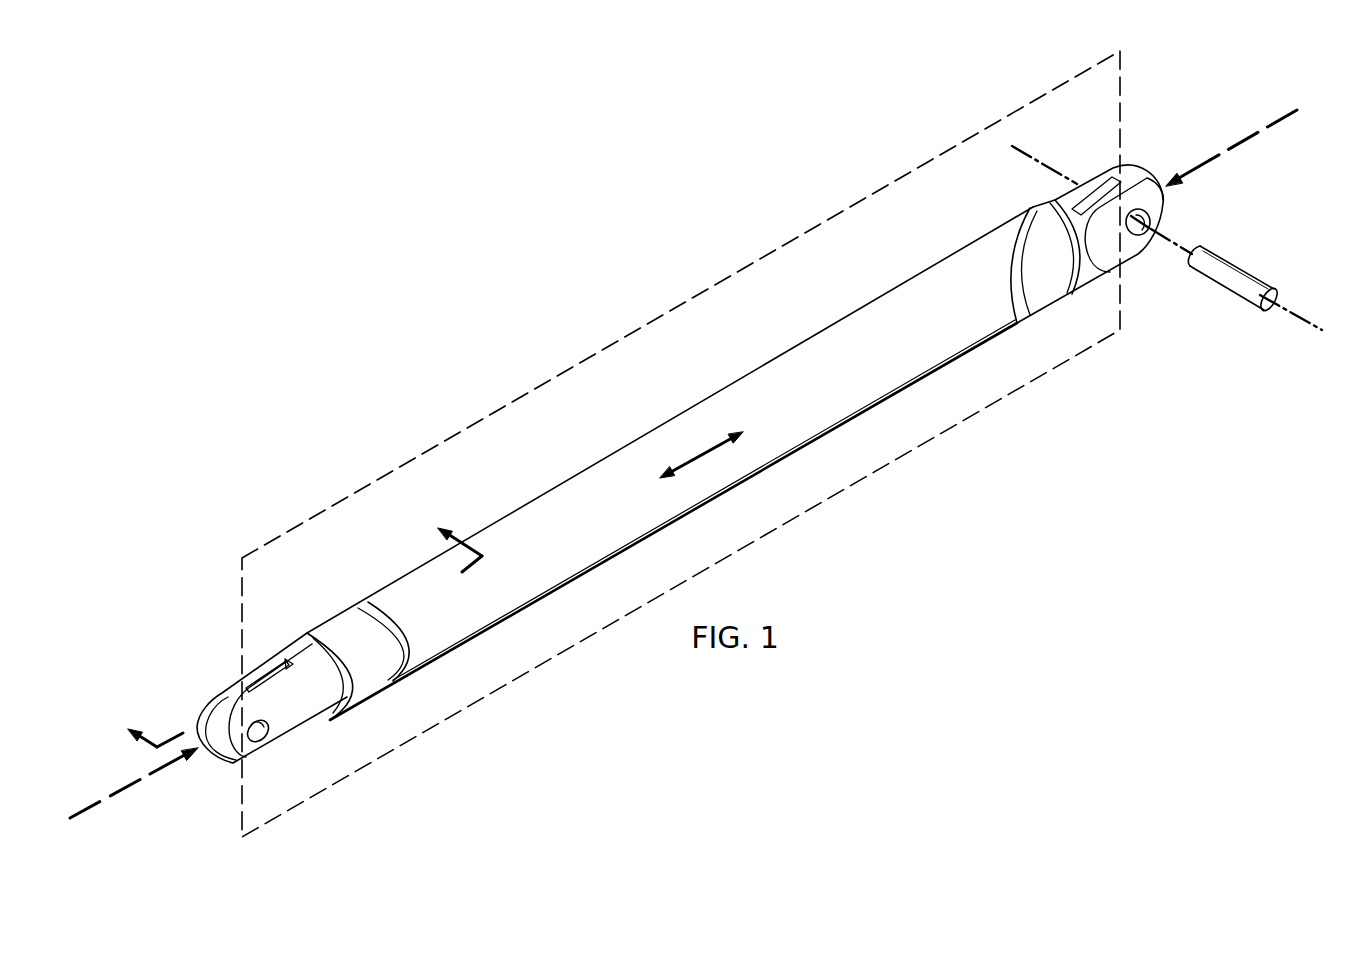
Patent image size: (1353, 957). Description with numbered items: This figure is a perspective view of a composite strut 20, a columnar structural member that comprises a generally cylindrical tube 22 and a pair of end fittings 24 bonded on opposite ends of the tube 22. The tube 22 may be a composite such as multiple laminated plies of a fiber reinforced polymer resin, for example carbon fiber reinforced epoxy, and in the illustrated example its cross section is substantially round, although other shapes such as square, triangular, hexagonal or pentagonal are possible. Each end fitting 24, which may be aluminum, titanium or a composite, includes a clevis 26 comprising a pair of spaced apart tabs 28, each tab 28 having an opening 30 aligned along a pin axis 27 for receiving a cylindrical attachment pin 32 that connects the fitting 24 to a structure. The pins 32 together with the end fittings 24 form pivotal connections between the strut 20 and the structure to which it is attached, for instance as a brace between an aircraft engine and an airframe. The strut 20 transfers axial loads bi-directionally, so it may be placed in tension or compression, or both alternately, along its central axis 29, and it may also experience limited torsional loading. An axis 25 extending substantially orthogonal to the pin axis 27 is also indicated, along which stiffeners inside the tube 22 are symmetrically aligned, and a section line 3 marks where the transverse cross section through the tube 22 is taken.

The section line 3- 3 is at (295, 630).
The strut 20 is at (640, 265).
The tube 22 is at (556, 478).
The end fitting 24 is at (330, 625).
The axis 25 is at (870, 474).
The clevis 26 is at (220, 763).
The pin axis 27 is at (1293, 314).
The tab 28 is at (211, 706).
The central axis 29 is at (106, 799).
The opening 30 is at (262, 742).
The attachment pin 32 is at (1240, 268).